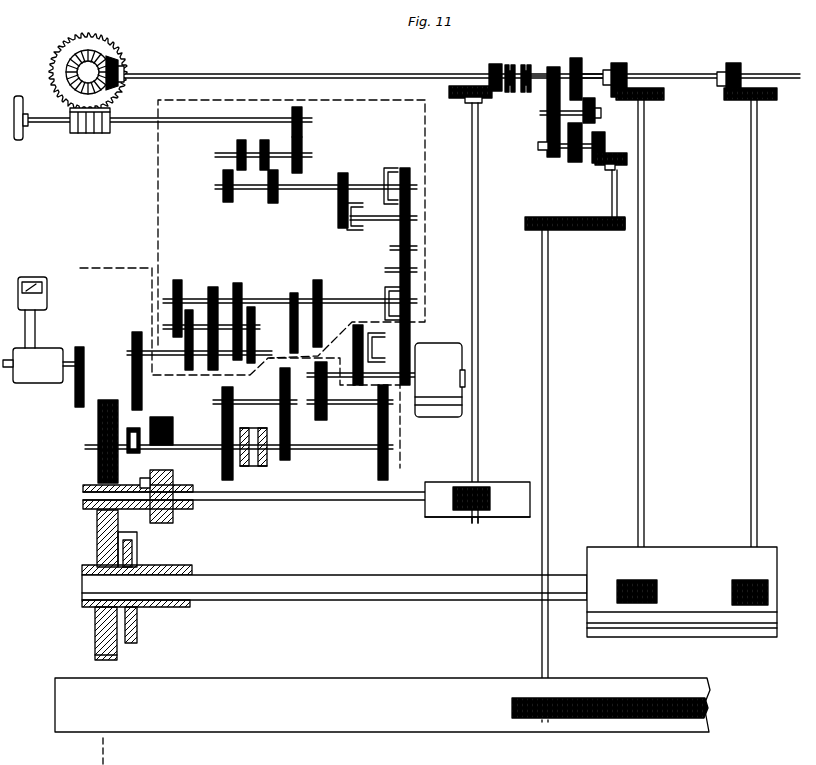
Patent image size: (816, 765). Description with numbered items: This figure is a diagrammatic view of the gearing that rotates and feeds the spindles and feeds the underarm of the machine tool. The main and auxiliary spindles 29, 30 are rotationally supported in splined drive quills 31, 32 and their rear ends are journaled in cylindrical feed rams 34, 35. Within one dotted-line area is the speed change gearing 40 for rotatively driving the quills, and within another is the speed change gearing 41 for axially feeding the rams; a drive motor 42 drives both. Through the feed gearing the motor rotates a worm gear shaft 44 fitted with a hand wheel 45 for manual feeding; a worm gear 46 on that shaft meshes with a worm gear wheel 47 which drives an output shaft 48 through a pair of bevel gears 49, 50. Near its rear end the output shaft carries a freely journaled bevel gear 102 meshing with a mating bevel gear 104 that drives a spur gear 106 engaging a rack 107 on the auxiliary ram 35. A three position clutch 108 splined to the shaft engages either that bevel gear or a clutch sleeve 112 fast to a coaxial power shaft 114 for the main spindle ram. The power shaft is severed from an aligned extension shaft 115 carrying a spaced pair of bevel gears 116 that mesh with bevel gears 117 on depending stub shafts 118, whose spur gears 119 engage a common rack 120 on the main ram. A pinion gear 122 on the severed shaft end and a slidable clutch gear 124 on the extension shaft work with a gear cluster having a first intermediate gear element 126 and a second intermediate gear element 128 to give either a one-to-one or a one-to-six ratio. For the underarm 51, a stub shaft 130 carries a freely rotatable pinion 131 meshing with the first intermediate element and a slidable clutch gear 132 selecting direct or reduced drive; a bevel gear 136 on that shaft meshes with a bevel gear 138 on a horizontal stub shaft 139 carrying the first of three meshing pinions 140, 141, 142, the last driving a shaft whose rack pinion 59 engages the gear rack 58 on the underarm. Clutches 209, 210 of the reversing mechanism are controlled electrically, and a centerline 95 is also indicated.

The main spindle 29 is at (90, 582).
The auxiliary spindle 30 is at (83, 494).
The splined drive quill 31 is at (175, 568).
The splined drive quill 32 is at (180, 512).
The feed ram 34 is at (713, 548).
The feed ram 35 is at (432, 517).
The speed change gearing 40 is at (405, 436).
The speed change gearing 41 is at (428, 186).
The drive motor 42 is at (445, 348).
The worm gear shaft 44 is at (190, 122).
The hand wheel 45 is at (18, 140).
The worm gear 46 is at (84, 133).
The worm gear wheel 47 is at (110, 45).
The output shaft 48 is at (250, 68).
The bevel gear 49 is at (66, 70).
The bevel gear 50 is at (112, 64).
The underarm 51 is at (352, 682).
The gear rack 58 is at (598, 718).
The rack pinion 59 is at (545, 722).
The centerline 95 is at (124, 751).
The bevel gear 102 is at (488, 64).
The bevel gear 104 is at (452, 91).
The spur gear 106 is at (458, 488).
The rack 107 is at (503, 492).
The three position clutch 108 is at (510, 65).
The clutch sleeve 112 is at (531, 65).
The coaxial power shaft 114 is at (535, 82).
The extension shaft 115 is at (592, 77).
The bevel gears 116 is at (620, 66).
The bevel gears 117 is at (658, 95).
The stub shafts 118 is at (640, 298).
The spur gears 119 is at (618, 583).
The rack 120 is at (690, 588).
The pinion gear 122 is at (552, 66).
The slidable clutch gear 124 is at (582, 60).
The first intermediate gear element 126 is at (545, 117).
The second intermediate gear element 128 is at (596, 116).
The stub shaft 130 is at (543, 146).
The pinion 131 is at (540, 152).
The slidable clutch gear 132 is at (572, 164).
The bevel gear 136 is at (603, 145).
The bevel gear 138 is at (620, 154).
The horizontal stub shaft 139 is at (612, 197).
The pinion 140 is at (612, 231).
The pinion 141 is at (572, 231).
The pinion 142 is at (526, 220).
The clutch 209 is at (388, 170).
The clutch 210 is at (355, 230).